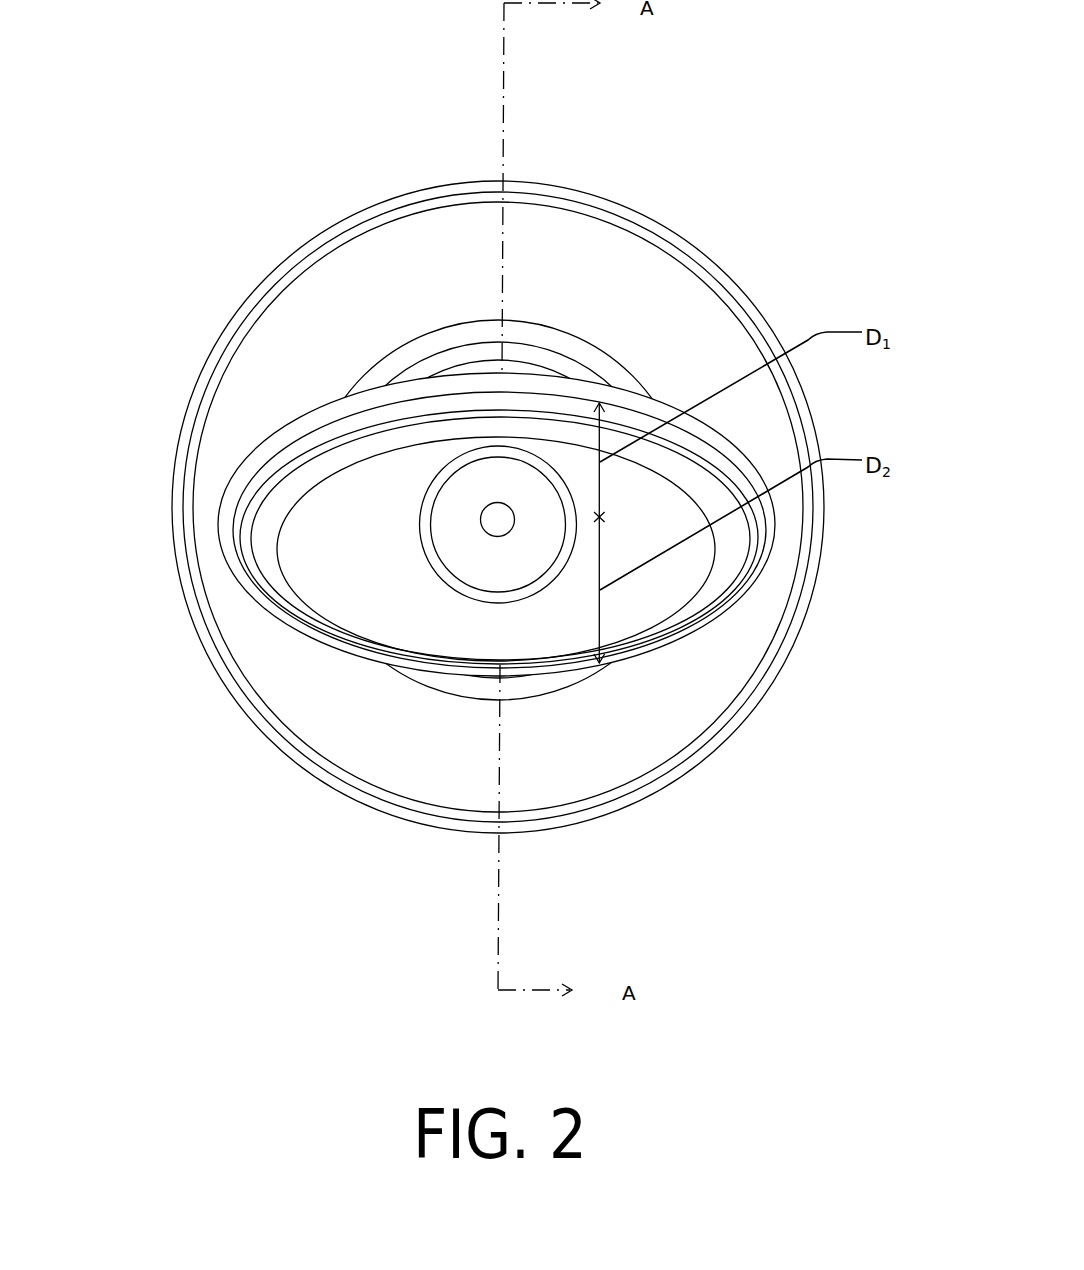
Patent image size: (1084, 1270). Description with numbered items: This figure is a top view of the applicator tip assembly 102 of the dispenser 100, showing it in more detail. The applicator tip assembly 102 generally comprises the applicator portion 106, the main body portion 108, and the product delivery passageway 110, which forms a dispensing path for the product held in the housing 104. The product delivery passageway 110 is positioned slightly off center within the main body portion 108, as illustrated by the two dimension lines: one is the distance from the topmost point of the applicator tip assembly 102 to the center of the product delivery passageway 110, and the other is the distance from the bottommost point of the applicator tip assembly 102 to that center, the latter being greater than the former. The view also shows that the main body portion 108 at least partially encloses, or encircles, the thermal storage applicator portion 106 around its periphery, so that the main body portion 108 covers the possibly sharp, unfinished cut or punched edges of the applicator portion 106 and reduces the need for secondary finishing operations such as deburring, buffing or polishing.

The dispenser 100 is at (469, 440).
The applicator tip assembly 102 is at (678, 336).
The housing 104 is at (641, 737).
The applicator portion 106 is at (338, 527).
The main body portion 108 is at (477, 542).
The product delivery passageway 110 is at (493, 512).